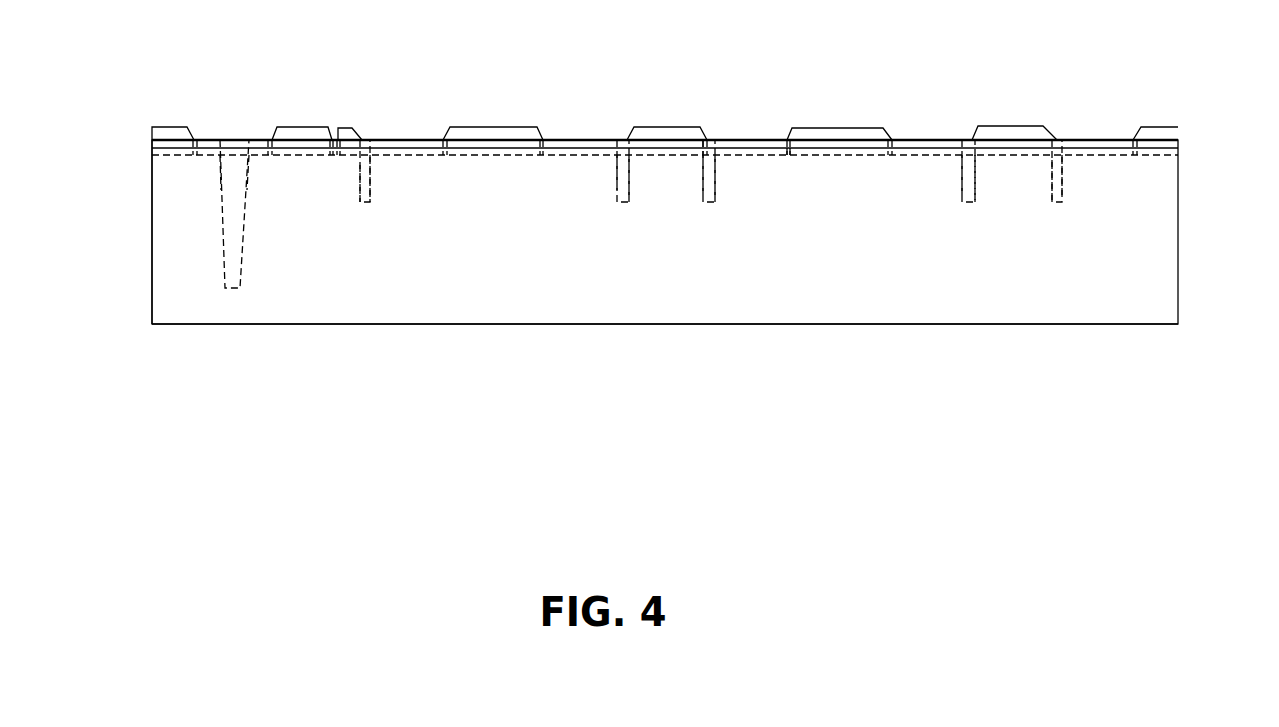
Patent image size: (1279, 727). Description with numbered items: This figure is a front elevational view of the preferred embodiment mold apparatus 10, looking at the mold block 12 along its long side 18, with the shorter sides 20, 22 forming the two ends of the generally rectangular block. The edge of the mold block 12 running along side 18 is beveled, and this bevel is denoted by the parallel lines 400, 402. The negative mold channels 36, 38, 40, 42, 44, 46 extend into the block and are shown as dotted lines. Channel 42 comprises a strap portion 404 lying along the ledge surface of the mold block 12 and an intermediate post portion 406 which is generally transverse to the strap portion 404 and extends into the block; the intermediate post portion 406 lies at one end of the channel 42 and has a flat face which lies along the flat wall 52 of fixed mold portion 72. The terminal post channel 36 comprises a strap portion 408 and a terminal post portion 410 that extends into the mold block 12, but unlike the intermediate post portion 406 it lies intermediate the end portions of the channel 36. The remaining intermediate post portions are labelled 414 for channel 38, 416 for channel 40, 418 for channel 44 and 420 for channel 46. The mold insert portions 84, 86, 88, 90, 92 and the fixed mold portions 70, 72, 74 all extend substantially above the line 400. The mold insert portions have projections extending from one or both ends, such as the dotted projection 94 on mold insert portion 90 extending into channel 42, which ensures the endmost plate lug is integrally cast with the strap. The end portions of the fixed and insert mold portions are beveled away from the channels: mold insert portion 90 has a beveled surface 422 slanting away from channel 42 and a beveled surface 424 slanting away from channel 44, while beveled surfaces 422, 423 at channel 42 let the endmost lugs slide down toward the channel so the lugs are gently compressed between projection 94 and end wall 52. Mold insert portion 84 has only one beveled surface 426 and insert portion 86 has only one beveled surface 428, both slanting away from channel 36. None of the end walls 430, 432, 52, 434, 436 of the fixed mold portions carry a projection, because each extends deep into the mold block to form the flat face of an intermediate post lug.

The mold apparatus 10 is at (1007, 58).
The mold block 12 is at (1188, 213).
The long side 18 is at (195, 245).
The shorter side 20 is at (1178, 276).
The shorter side 22 is at (152, 220).
The terminal post channel 36 is at (220, 157).
The mold channel 38 is at (372, 160).
The mold channel 40 is at (617, 157).
The intermediate post channel 42 is at (722, 164).
The mold channel 44 is at (962, 158).
The mold channel 46 is at (1063, 158).
The flat wall 52 is at (703, 182).
The fixed mold portion 70 is at (340, 130).
The fixed mold portion 72 is at (666, 134).
The fixed mold portion 74 is at (1015, 132).
The mold insert portion 84 is at (172, 133).
The mold insert portion 86 is at (297, 133).
The mold insert portion 88 is at (482, 136).
The mold insert portion 90 is at (866, 136).
The mold insert portion 92 is at (1160, 135).
The projection 94 is at (790, 158).
The bevel line 400 is at (735, 140).
The bevel line 402 is at (747, 148).
The strap portion 404 is at (740, 157).
The intermediate post portion 406 is at (710, 204).
The strap portion 408 is at (250, 155).
The terminal post portion 410 is at (238, 243).
The intermediate post portion 414 is at (373, 202).
The intermediate post portion 416 is at (629, 198).
The intermediate post portion 418 is at (968, 204).
The intermediate post portion 420 is at (1057, 203).
The beveled surface 422 is at (788, 140).
The beveled surface 423 is at (705, 138).
The beveled surface 424 is at (888, 140).
The beveled surface 426 is at (195, 138).
The beveled surface 428 is at (272, 138).
The end wall 430 is at (360, 178).
The end wall 432 is at (631, 187).
The end wall 434 is at (975, 181).
The end wall 436 is at (1050, 202).